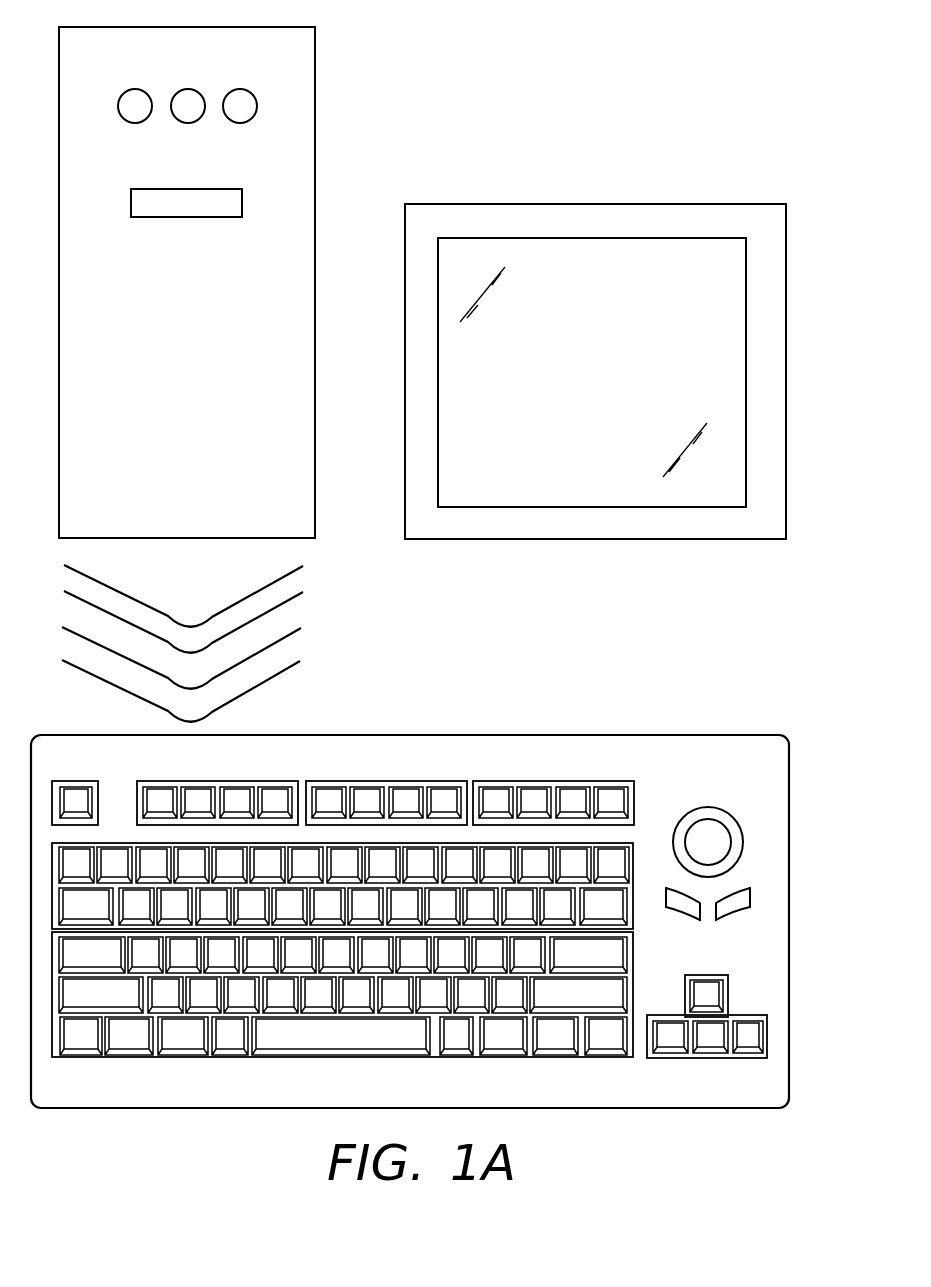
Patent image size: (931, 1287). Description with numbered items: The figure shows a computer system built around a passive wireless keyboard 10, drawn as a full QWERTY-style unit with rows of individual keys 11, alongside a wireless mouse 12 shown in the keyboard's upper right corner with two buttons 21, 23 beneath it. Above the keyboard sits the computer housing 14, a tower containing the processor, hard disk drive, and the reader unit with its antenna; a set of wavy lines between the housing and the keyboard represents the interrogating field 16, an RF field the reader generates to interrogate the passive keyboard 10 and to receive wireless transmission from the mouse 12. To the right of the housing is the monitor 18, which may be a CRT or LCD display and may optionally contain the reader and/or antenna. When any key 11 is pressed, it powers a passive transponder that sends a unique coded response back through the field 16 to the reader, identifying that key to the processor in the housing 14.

The passive wireless keyboard 10 is at (643, 682).
The key 11 is at (625, 848).
The wireless mouse 12 is at (744, 802).
The housing 14 is at (338, 103).
The interrogating field 16 is at (334, 601).
The monitor 18 is at (558, 192).
The left button 21 is at (675, 916).
The right button 23 is at (734, 916).